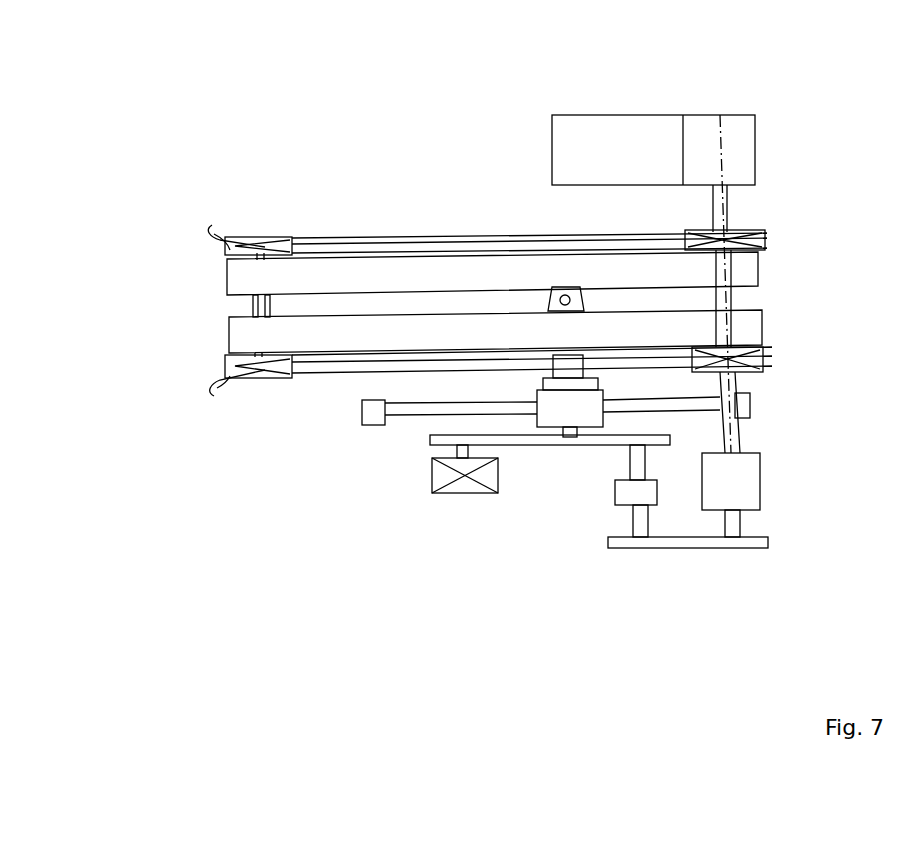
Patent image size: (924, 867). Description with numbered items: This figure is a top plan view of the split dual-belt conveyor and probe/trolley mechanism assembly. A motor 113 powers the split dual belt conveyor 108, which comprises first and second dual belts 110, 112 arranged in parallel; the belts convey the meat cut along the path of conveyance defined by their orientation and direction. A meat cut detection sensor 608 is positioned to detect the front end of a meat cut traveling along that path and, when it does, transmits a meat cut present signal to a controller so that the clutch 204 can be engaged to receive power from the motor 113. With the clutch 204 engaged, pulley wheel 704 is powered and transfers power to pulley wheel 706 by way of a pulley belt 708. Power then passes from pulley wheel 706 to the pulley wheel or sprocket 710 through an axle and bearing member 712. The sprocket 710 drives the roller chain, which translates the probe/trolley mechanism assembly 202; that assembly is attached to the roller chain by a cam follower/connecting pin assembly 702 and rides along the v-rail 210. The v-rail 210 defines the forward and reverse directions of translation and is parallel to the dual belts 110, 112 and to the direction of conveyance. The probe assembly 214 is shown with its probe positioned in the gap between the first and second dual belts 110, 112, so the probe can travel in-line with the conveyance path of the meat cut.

The motor 113 is at (676, 118).
The meat cut detection sensor 608 is at (487, 182).
The second dual belt 112 is at (401, 266).
The split dual belt conveyor 108 is at (187, 326).
The first dual belt 110 is at (449, 366).
The probe assembly 214 is at (591, 255).
The v-rail 210 is at (536, 454).
The probe/trolley mechanism assembly 202 is at (525, 475).
The cam follower/connecting pin assembly 702 is at (641, 511).
The pulley wheel or sprocket 710 is at (550, 494).
The axle and bearing member 712 is at (586, 532).
The pulley wheel 706 is at (605, 585).
The pulley belt 708 is at (688, 601).
The pulley wheel 704 is at (780, 580).
The clutch 204 is at (786, 481).